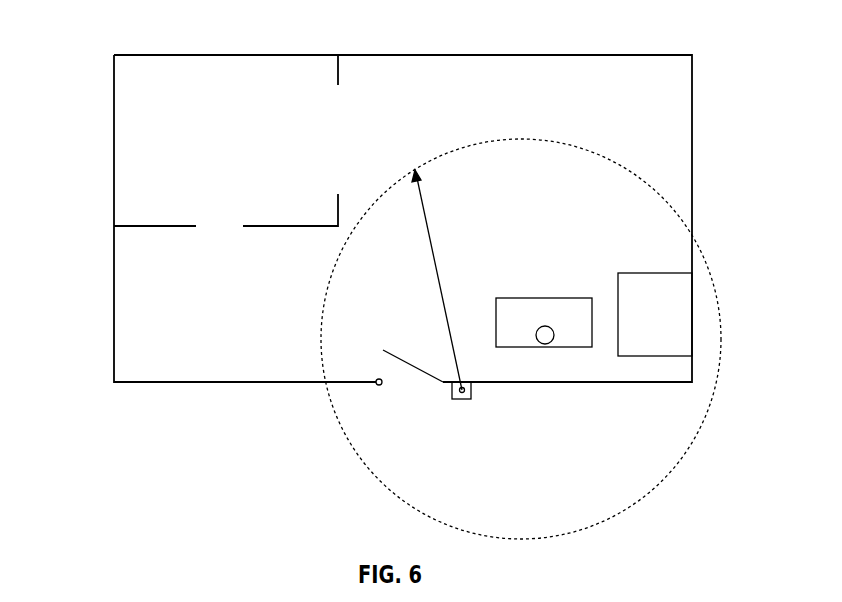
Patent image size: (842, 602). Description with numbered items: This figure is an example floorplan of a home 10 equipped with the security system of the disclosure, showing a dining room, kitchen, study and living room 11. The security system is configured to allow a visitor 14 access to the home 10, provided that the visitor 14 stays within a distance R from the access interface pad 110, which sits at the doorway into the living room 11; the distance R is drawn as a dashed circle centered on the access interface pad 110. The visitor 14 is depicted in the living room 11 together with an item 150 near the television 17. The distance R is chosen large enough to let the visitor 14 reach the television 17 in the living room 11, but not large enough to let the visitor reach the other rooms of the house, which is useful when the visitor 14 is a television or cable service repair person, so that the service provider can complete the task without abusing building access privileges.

The home 10 is at (112, 150).
The living room 11 is at (573, 268).
The access interface pad 110 is at (450, 391).
The visitor 14 is at (587, 347).
The mobile terminal 150 is at (546, 344).
The television 17 is at (693, 336).